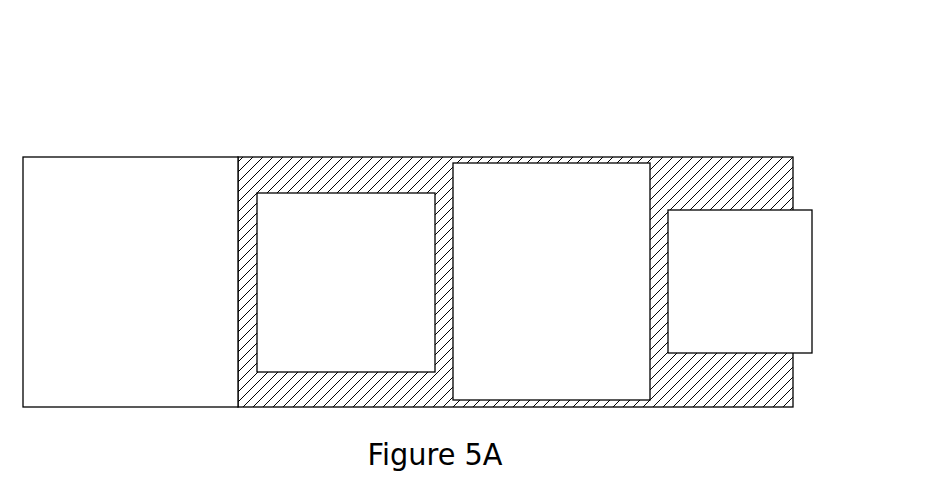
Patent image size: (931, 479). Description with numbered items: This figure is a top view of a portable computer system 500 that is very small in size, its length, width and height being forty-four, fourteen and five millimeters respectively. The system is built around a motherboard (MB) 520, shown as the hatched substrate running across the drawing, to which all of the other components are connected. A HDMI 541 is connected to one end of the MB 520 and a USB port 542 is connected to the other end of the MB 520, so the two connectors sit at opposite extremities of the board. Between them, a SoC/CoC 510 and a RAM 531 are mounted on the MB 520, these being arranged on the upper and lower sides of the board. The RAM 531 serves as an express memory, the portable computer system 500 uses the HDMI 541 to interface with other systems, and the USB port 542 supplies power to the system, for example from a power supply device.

The portable computer system 500 is at (711, 38).
The SoC/CoC 510 is at (347, 215).
The motherboard (MB) 520 is at (432, 174).
The RAM 531 is at (568, 188).
The HDMI 541 is at (153, 175).
The USB port 542 is at (772, 238).